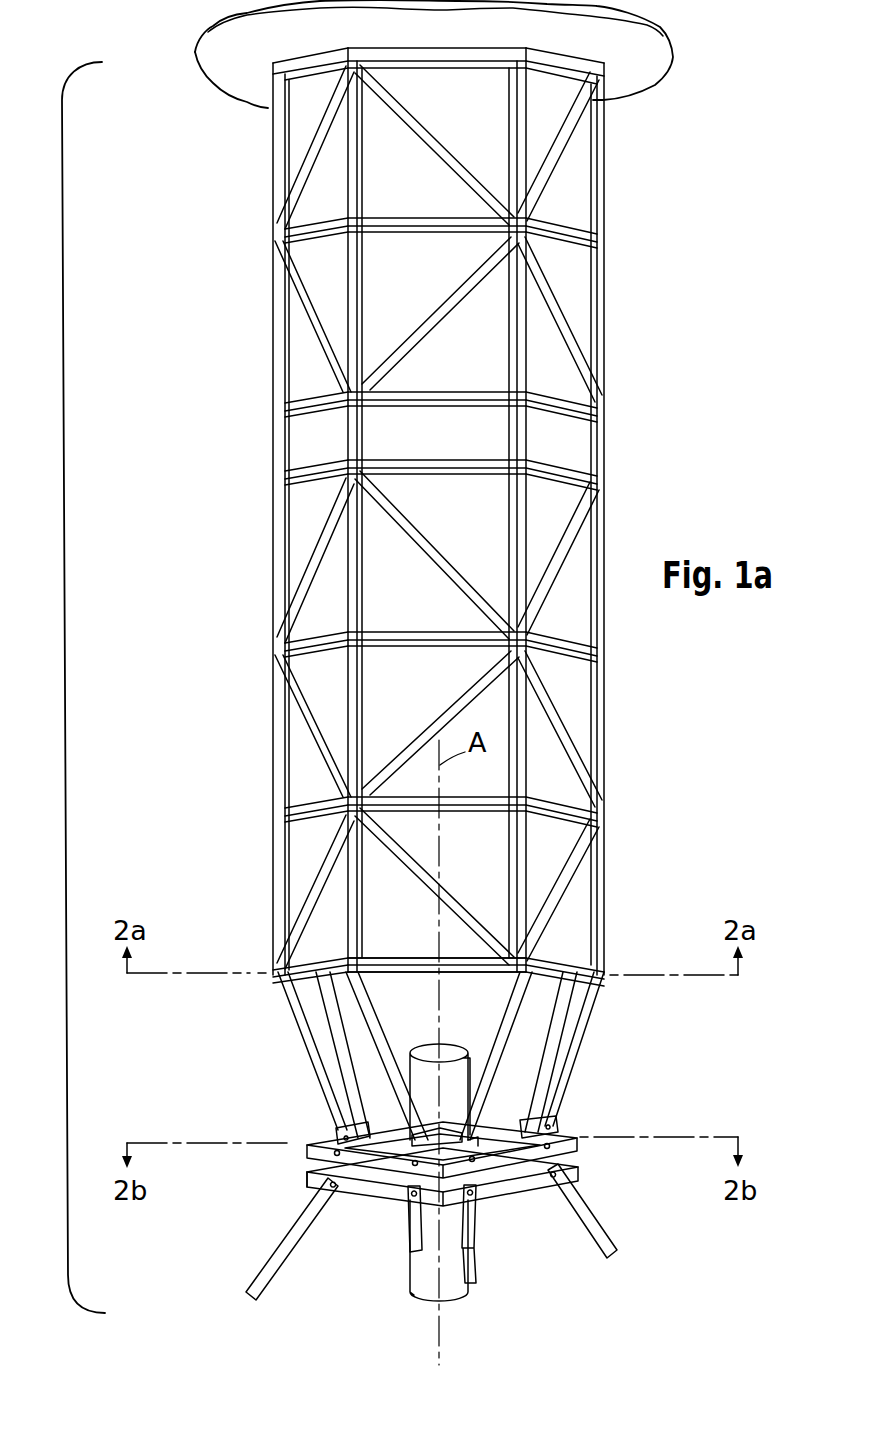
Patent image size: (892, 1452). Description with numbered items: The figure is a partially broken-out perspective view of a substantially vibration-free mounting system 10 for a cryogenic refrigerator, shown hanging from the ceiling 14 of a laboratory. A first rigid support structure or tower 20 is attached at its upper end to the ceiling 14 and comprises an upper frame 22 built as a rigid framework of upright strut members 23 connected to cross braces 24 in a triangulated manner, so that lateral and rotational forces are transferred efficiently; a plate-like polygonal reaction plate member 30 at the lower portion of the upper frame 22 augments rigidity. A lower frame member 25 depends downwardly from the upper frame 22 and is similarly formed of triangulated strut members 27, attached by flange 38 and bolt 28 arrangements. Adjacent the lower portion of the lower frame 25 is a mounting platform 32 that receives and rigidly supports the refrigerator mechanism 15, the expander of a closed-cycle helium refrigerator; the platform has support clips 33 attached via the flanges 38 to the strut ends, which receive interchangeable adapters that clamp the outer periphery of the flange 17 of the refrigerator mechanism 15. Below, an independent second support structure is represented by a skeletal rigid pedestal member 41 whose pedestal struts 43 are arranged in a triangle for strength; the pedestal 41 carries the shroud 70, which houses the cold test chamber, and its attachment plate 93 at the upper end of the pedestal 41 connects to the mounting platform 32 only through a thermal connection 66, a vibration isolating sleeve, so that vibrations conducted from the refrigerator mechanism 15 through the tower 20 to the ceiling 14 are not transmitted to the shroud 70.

The mounting system 10 is at (63, 625).
The ceiling 14 is at (653, 52).
The refrigerator mechanism 15 is at (455, 1060).
The flange 17 is at (408, 1130).
The first rigid support structure 20 is at (518, 517).
The upper frame 22 is at (250, 722).
The upright strut members 23 is at (512, 326).
The cross braces 24 is at (430, 228).
The lower frame member 25 is at (465, 1056).
The strut members 27 is at (303, 1010).
The bolt 28 is at (260, 957).
The reaction plate member 30 is at (386, 966).
The mounting platform 32 is at (482, 1125).
The support clips 33 is at (577, 1146).
The flange 38 is at (335, 1128).
The pedestal member 41 is at (481, 1232).
The pedestal struts 43 is at (413, 1238).
The thermal connection 66 is at (397, 1178).
The shroud 70 is at (496, 1267).
The attachment plate 93 is at (310, 1182).